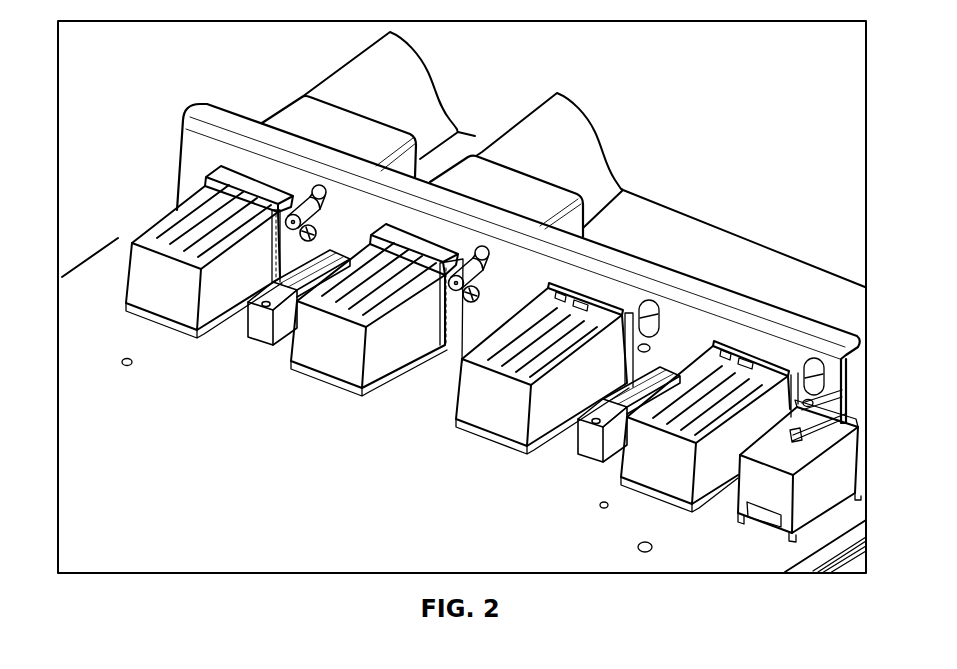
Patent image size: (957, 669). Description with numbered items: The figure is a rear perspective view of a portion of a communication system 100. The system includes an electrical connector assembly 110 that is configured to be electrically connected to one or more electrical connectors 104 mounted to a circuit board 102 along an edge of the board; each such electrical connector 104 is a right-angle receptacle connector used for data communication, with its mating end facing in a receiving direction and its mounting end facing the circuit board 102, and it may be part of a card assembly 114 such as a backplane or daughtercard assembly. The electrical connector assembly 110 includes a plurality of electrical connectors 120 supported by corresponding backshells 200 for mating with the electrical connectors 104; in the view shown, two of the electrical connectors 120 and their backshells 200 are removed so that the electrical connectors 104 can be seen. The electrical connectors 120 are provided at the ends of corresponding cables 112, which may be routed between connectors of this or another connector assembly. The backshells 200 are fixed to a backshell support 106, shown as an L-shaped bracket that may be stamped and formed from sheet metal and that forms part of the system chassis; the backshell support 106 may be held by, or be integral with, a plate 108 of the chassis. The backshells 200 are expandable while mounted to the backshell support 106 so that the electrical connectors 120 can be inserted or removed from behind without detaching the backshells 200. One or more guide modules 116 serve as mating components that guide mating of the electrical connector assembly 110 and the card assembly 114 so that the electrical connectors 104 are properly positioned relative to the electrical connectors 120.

The communication system 100 is at (622, 84).
The circuit board 102 is at (88, 278).
The electrical connector 104 is at (160, 232).
The backshell support 106 is at (578, 272).
The plate 108 is at (722, 250).
The electrical connector assembly 110 is at (231, 102).
The cable 112 is at (353, 77).
The card assembly 114 is at (99, 234).
The guide module 116 is at (263, 327).
The electrical connector 120 is at (220, 183).
The backshell 200 is at (296, 110).